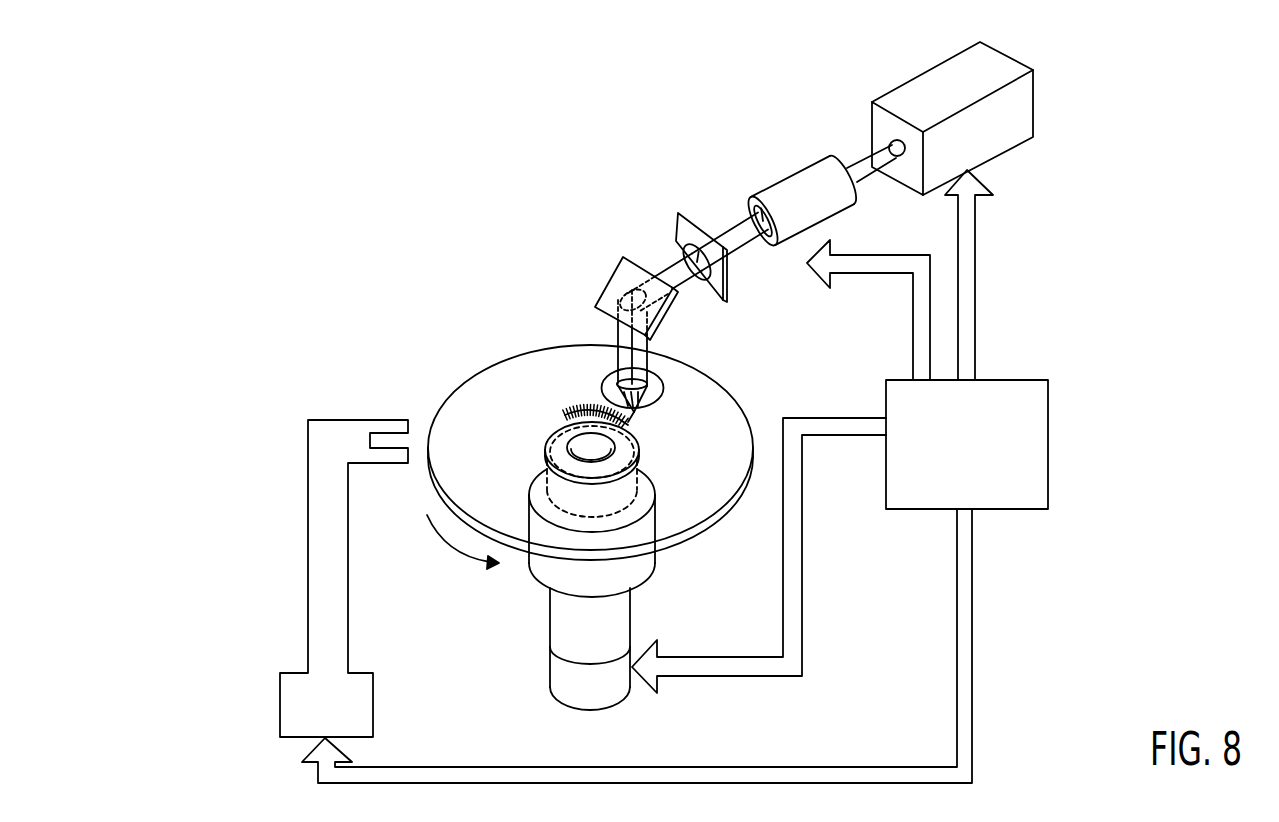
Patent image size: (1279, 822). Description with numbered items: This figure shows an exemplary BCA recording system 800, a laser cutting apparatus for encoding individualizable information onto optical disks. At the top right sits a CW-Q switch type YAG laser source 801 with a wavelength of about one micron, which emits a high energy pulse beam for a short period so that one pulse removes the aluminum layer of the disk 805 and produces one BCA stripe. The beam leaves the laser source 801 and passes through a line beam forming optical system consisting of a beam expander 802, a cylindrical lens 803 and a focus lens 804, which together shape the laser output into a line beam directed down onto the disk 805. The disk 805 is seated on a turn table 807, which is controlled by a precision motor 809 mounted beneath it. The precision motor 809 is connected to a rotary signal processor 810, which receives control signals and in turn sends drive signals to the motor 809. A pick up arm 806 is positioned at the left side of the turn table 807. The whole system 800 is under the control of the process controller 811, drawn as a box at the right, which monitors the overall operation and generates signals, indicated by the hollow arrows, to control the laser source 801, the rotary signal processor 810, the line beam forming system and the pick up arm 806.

The BCA recording system 800 is at (516, 188).
The laser source 801 is at (900, 84).
The beam expander 802 is at (777, 178).
The cylindrical lens 803 is at (672, 230).
The focus lens 804 is at (598, 368).
The disk 805 is at (437, 413).
The pick up arm 806 is at (307, 478).
The turn table 807 is at (522, 577).
The precision motor 809 is at (549, 630).
The rotary signal processor 810 is at (549, 694).
The process controller 811 is at (1050, 413).